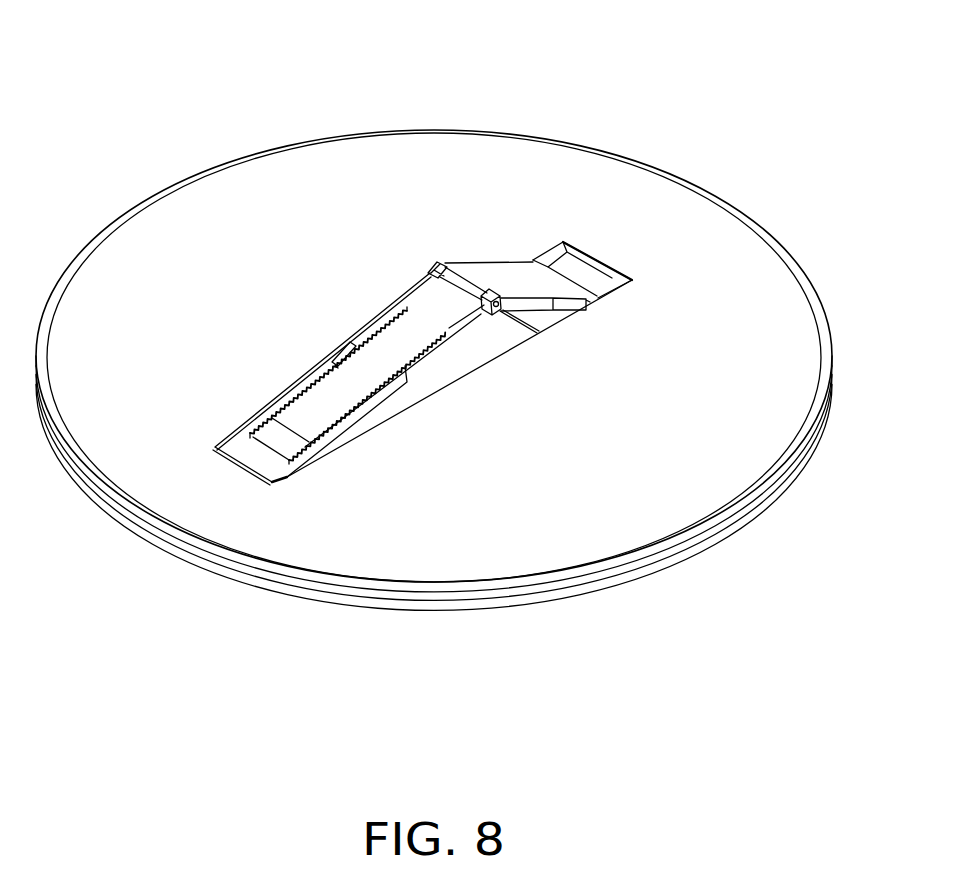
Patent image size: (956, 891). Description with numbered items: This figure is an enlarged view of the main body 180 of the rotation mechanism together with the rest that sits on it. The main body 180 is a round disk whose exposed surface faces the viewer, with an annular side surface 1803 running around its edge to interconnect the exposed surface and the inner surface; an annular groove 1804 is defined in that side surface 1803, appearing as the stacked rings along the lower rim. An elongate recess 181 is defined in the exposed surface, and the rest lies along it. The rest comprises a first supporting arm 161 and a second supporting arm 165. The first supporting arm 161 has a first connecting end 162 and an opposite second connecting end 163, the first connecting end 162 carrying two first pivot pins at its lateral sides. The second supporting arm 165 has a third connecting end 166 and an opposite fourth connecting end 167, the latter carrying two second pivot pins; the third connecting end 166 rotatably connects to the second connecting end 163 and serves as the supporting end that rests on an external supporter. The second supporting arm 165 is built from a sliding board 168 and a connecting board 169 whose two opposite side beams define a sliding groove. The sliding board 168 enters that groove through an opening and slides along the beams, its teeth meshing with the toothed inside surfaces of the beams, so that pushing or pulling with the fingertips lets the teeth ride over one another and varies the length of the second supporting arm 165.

The second supporting arm 165 is at (252, 55).
The first supporting arm 161 is at (510, 277).
The first connecting end 162 is at (575, 280).
The second connecting end 163 is at (453, 265).
The third connecting end 166 is at (432, 268).
The fourth connecting end 167 is at (283, 487).
The sliding board 168 is at (340, 383).
The connecting board 169 is at (240, 456).
The main body 180 is at (700, 268).
The elongate recess 181 is at (482, 342).
The annular side surface 1803 is at (449, 607).
The annular groove 1804 is at (702, 541).